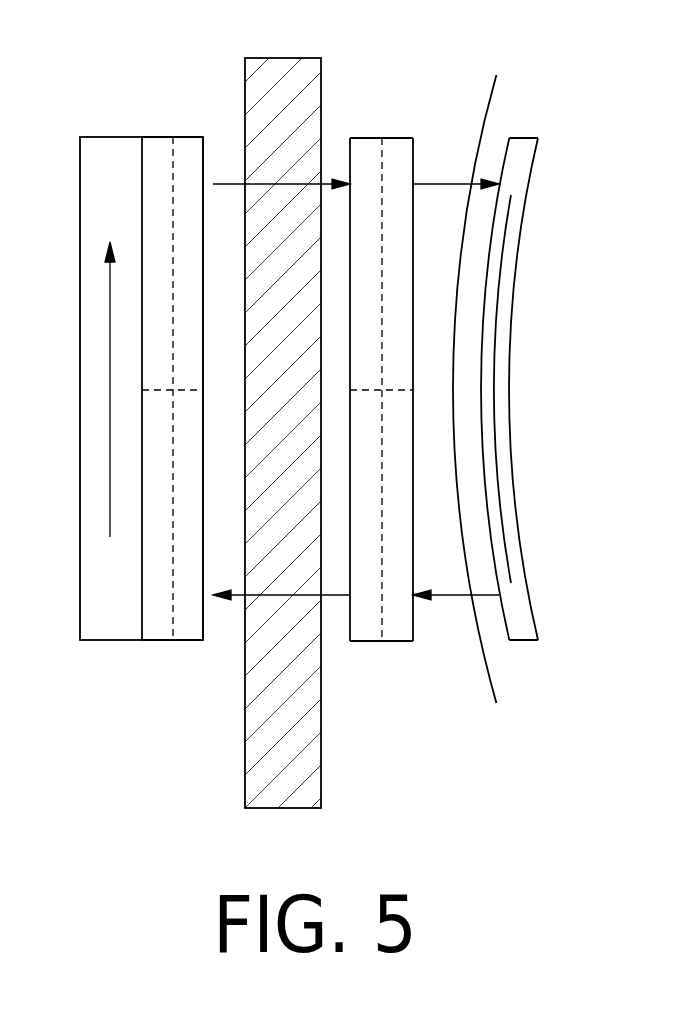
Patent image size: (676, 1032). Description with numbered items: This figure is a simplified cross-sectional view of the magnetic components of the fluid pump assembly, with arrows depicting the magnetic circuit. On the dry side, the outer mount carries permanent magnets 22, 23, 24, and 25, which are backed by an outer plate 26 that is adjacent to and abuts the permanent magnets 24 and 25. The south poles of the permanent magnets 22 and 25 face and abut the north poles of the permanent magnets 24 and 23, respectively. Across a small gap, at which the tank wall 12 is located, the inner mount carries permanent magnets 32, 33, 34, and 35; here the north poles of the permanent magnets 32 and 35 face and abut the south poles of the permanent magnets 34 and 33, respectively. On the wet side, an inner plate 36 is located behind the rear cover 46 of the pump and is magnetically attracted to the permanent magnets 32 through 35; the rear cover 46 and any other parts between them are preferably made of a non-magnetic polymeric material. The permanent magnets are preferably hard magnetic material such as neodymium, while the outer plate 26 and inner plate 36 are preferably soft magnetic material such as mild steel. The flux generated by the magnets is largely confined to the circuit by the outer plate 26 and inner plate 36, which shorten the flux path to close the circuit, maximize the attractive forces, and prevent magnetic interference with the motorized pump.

The tank wall 12 is at (288, 58).
The permanent magnet 22 is at (193, 620).
The permanent magnet 23 is at (193, 157).
The permanent magnet 24 is at (152, 620).
The permanent magnet 25 is at (152, 157).
The outer plate 26 is at (90, 187).
The permanent magnet 32 is at (360, 621).
The permanent magnet 33 is at (360, 157).
The permanent magnet 34 is at (401, 621).
The permanent magnet 35 is at (401, 157).
The inner plate 36 is at (512, 448).
The rear cover 46 is at (493, 92).